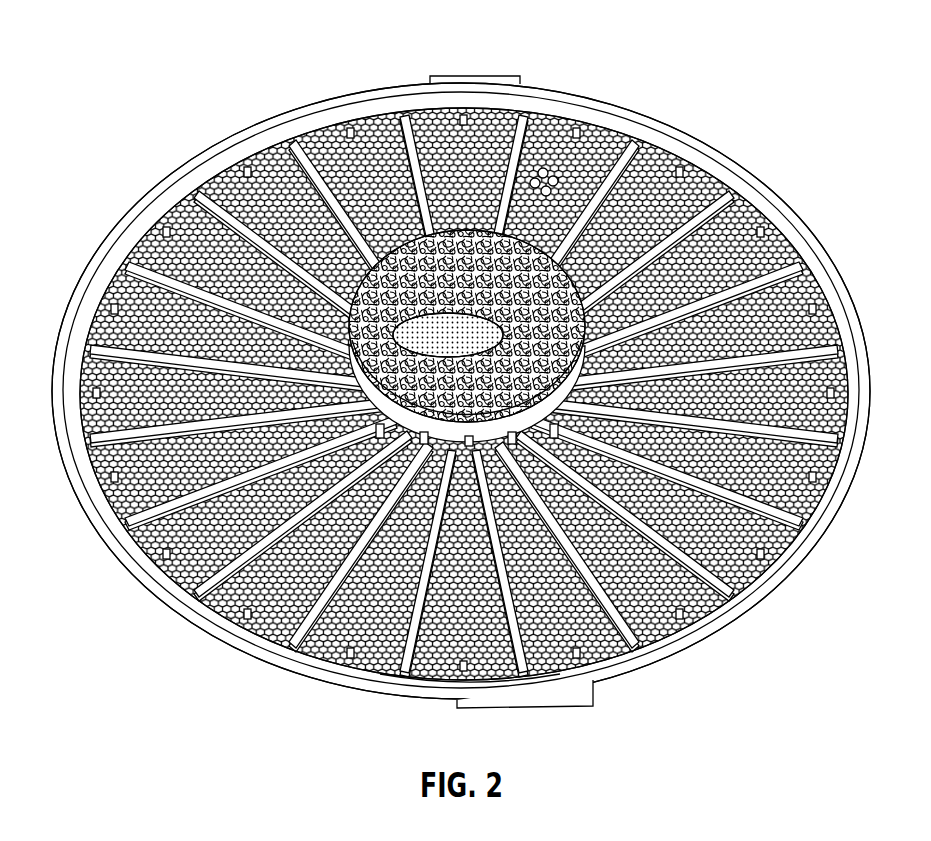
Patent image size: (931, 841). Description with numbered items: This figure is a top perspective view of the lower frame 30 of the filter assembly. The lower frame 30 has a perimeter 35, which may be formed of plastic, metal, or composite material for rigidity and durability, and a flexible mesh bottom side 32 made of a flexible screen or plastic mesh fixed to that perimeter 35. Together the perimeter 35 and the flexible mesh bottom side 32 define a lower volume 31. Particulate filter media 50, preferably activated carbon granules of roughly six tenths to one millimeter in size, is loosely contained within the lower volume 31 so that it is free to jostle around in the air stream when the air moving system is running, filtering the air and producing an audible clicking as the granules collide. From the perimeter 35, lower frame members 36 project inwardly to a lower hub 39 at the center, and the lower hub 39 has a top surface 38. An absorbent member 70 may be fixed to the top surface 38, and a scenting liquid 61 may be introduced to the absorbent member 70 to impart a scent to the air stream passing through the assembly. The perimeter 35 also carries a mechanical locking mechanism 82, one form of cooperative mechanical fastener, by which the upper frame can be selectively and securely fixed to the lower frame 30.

The lower frame 30 is at (748, 42).
The lower volume 31 is at (800, 470).
The flexible mesh bottom side 32 is at (493, 657).
The perimeter 35 is at (682, 653).
The lower frame members 36 is at (242, 625).
The top surface 38 is at (233, 468).
The lower hub 39 is at (720, 475).
The particulate filter media 50 is at (543, 168).
The scenting liquid 61 is at (458, 240).
The absorbent member 70 is at (442, 327).
The mechanical locking mechanism 82 is at (547, 686).